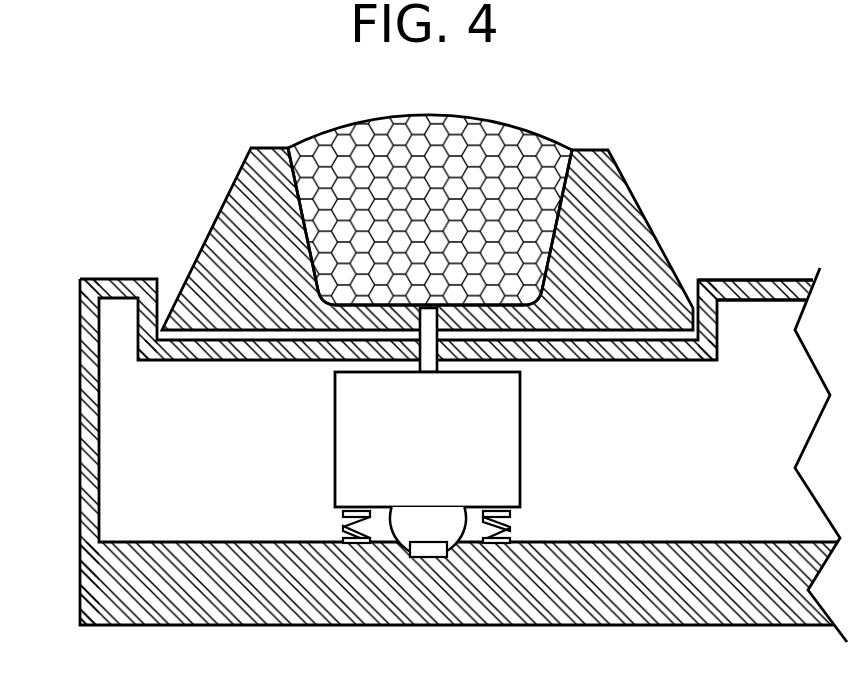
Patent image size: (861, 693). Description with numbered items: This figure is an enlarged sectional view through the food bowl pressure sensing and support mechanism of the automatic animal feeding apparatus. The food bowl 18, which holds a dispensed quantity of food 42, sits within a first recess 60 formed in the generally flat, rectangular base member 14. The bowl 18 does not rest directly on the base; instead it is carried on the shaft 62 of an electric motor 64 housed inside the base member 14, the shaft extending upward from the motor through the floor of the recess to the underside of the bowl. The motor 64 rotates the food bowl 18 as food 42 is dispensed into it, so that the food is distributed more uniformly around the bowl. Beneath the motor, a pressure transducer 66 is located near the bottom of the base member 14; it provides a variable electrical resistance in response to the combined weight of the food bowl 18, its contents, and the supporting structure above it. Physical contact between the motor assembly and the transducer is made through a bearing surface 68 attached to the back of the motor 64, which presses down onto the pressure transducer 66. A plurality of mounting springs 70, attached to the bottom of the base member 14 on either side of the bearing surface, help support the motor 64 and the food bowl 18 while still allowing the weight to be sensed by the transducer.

The base member 14 is at (88, 385).
The food bowl 18 is at (230, 195).
The food 42 is at (370, 147).
The first recess 60 is at (689, 267).
The shaft 62 is at (428, 347).
The electric motor 64 is at (512, 405).
The pressure transducer 66 is at (427, 552).
The bearing surface 68 is at (450, 518).
The mounting springs 70 is at (343, 528).